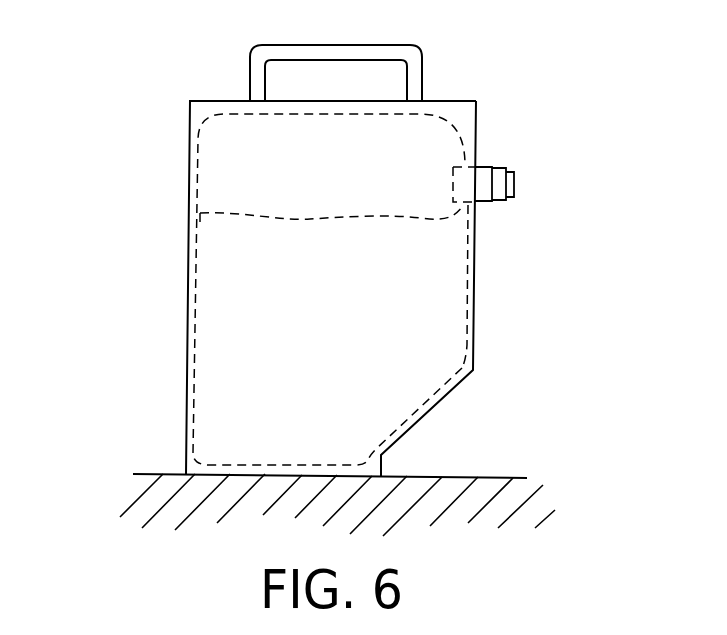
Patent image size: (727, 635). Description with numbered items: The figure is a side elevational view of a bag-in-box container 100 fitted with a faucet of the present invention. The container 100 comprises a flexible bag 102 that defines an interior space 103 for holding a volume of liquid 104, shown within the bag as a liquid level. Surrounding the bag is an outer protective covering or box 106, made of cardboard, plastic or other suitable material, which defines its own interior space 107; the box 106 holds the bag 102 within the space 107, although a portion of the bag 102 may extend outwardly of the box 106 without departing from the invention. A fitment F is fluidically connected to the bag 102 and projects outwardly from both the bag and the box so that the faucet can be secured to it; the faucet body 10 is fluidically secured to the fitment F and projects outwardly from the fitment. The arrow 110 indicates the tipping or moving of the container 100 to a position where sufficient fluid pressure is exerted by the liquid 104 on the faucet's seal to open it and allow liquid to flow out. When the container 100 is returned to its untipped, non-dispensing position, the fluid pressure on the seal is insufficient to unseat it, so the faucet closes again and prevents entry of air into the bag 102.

The bag-in-box container 100 is at (462, 98).
The flexible bag 102 is at (190, 300).
The interior space 103 is at (200, 404).
The liquid 104 is at (355, 214).
The box 106 is at (478, 342).
The interior space 107 is at (466, 286).
The arrow 110 is at (469, 462).
The fitment F is at (493, 163).
The body 10 is at (518, 168).